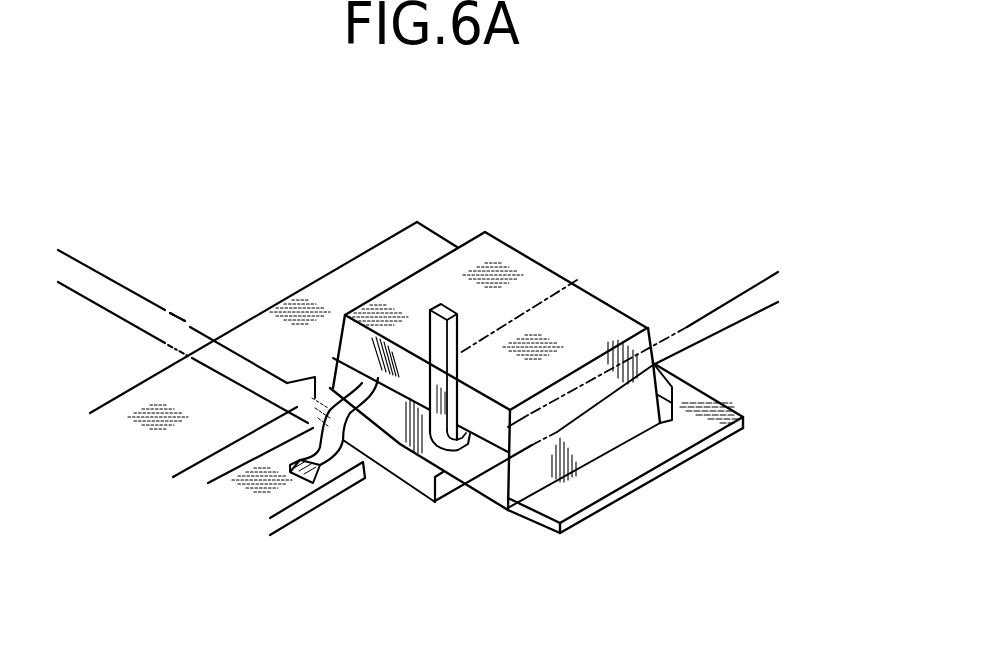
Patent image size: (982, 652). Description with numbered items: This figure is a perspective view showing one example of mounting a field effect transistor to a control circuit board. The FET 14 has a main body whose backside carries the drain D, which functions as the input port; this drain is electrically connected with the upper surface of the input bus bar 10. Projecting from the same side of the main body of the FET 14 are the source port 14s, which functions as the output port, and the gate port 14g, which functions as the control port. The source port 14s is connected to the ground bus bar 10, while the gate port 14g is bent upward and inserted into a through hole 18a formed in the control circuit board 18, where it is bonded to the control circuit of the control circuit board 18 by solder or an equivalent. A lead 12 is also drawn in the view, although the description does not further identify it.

The input bus bar 10 is at (682, 465).
The lead 12 is at (283, 498).
The FET 14 is at (535, 277).
The gate port 14g is at (447, 310).
The source port 14s is at (338, 400).
The control circuit board 18 is at (730, 337).
The through hole 18a is at (577, 280).